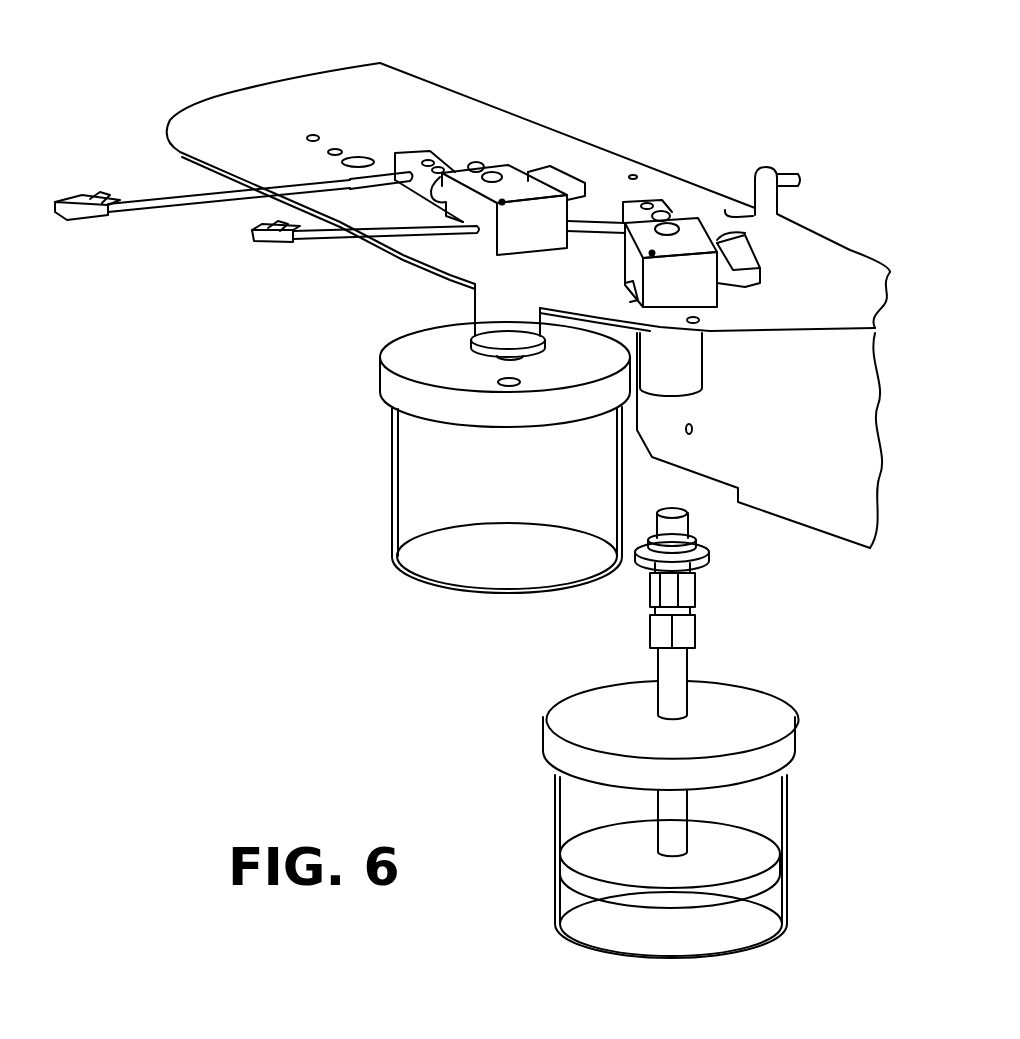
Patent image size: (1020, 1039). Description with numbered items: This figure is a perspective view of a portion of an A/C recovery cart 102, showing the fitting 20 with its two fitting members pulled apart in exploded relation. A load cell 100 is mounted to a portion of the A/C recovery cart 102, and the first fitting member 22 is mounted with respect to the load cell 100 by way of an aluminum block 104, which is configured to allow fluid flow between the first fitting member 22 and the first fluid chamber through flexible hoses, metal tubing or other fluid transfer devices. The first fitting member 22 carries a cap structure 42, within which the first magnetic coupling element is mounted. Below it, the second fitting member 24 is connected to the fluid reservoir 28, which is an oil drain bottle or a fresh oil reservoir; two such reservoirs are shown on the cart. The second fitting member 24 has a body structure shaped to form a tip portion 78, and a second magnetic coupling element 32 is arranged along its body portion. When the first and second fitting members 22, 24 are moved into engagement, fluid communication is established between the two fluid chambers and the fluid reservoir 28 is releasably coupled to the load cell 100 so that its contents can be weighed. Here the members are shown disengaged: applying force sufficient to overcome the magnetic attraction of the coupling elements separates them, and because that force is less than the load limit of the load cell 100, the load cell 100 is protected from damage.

The A/C recovery cart 102 is at (317, 87).
The load cell 100 is at (420, 152).
The aluminum block 104 is at (512, 183).
The fitting 20 is at (436, 306).
The fluid reservoir 28 is at (391, 461).
The first fitting member 22 is at (718, 357).
The cap structure 42 is at (697, 380).
The second fitting member 24 is at (700, 521).
The tip portion 78 is at (684, 509).
The second magnetic coupling element 32 is at (713, 548).